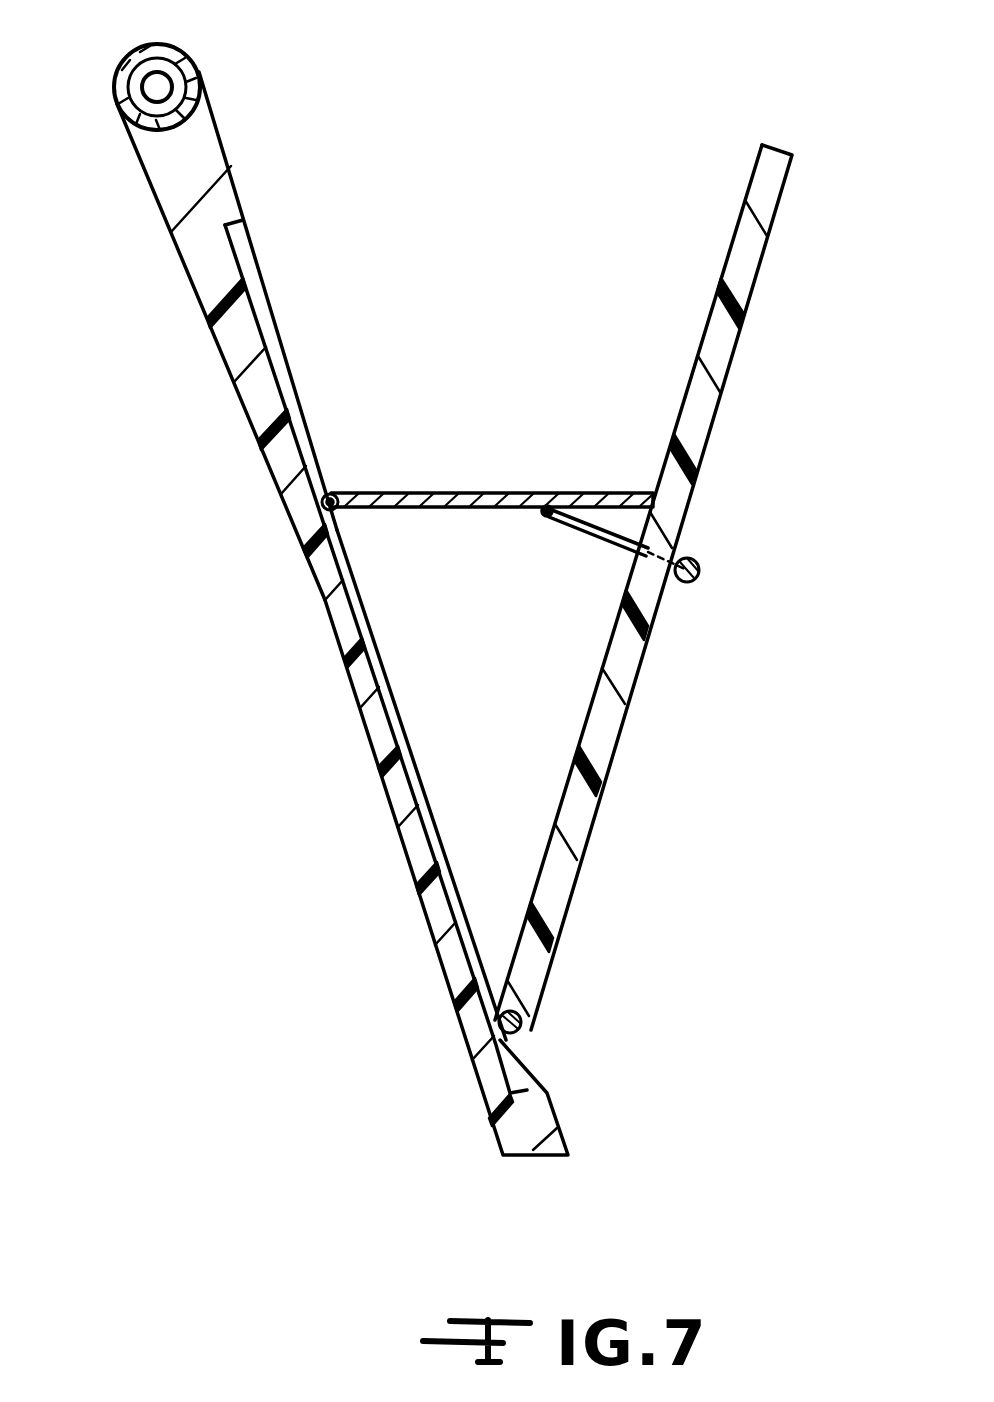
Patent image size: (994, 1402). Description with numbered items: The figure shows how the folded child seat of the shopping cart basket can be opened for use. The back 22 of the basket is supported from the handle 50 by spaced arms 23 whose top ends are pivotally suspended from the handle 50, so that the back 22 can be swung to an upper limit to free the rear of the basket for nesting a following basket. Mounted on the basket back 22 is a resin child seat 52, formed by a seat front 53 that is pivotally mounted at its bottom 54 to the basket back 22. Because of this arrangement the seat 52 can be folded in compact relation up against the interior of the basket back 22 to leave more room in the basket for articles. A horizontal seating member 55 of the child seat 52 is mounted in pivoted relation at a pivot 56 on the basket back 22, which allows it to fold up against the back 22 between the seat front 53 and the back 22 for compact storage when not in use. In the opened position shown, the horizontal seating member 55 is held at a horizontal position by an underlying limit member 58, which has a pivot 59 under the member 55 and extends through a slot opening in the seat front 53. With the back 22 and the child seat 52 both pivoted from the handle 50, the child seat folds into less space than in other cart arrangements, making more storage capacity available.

The handle 50 is at (190, 55).
The arms 23 is at (162, 173).
The back 22 is at (366, 745).
The child seat 52 is at (745, 370).
The seat front 53 is at (637, 687).
The bottom 54 is at (524, 1021).
The horizontal seating member 55 is at (472, 493).
The pivot 56 is at (333, 495).
The limit member 58 is at (602, 541).
The pivot 59 is at (547, 516).